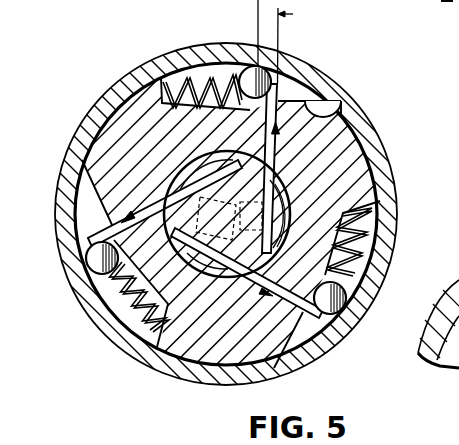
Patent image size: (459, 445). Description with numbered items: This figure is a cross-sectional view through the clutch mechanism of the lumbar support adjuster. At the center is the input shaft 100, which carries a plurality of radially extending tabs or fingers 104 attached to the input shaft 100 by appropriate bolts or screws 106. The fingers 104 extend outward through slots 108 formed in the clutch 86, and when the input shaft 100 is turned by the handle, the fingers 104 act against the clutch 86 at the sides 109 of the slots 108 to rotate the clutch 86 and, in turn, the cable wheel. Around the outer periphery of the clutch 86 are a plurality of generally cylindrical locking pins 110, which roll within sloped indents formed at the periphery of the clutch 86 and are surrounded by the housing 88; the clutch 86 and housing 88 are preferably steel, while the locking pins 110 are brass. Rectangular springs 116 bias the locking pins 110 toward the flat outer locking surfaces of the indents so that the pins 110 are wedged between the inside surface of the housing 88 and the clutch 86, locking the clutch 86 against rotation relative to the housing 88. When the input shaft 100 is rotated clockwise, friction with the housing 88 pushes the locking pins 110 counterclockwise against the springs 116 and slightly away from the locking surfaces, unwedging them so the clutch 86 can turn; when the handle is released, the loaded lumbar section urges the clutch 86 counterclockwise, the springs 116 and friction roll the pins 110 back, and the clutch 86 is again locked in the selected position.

The clutch 86 is at (123, 113).
The housing 88 is at (155, 58).
The input shaft 100 is at (180, 179).
The radially extending fingers 104 is at (342, 128).
The screws 106 is at (280, 201).
The slots 108 is at (380, 279).
The sides of the slots 109 is at (340, 114).
The locking pins 110 is at (272, 64).
The rectangular springs 116 is at (213, 78).